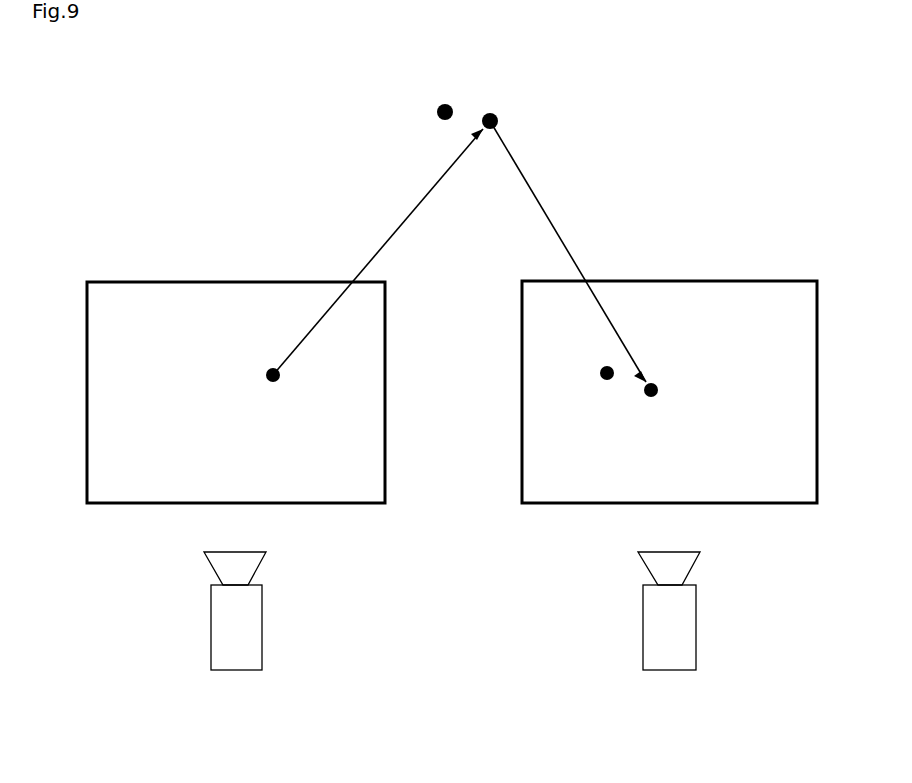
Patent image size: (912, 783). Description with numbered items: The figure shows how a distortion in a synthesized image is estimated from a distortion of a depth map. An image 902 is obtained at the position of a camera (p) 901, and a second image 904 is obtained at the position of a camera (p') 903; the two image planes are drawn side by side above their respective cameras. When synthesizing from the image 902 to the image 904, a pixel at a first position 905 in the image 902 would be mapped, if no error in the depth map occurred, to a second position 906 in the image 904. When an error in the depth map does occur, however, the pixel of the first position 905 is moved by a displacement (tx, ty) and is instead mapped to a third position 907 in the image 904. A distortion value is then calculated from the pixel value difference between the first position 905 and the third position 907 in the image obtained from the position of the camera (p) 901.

The camera (p) 901 is at (237, 670).
The image 902 is at (183, 282).
The camera (p') 903 is at (670, 670).
The image 904 is at (723, 281).
The first position 905 is at (266, 375).
The second position 906 is at (607, 380).
The third position 907 is at (651, 397).